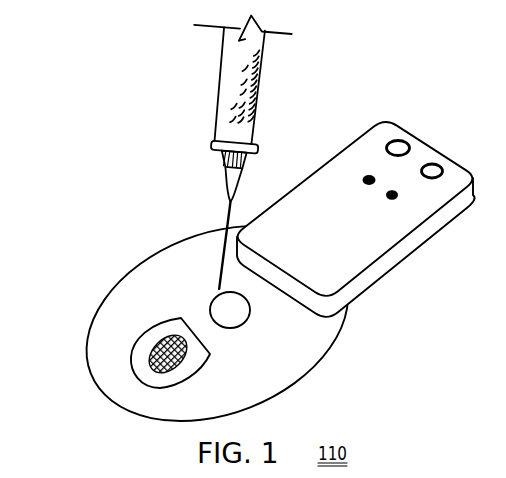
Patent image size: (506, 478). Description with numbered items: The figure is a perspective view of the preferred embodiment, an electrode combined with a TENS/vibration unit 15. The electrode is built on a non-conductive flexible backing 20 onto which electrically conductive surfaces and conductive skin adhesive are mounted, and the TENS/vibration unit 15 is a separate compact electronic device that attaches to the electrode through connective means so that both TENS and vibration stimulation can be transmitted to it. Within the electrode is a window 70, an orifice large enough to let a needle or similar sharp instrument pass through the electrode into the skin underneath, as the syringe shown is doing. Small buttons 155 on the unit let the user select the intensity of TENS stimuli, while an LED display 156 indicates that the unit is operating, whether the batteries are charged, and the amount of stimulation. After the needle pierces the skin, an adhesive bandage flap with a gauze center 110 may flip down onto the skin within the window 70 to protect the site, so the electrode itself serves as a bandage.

The TENS/vibration unit 15 is at (365, 228).
The non-conductive flexible backing 20 is at (194, 289).
The window 70 is at (251, 312).
The adhesive bandage flap with a gauze center 110 is at (129, 357).
The buttons 155 is at (401, 138).
The LED display 156 is at (367, 174).